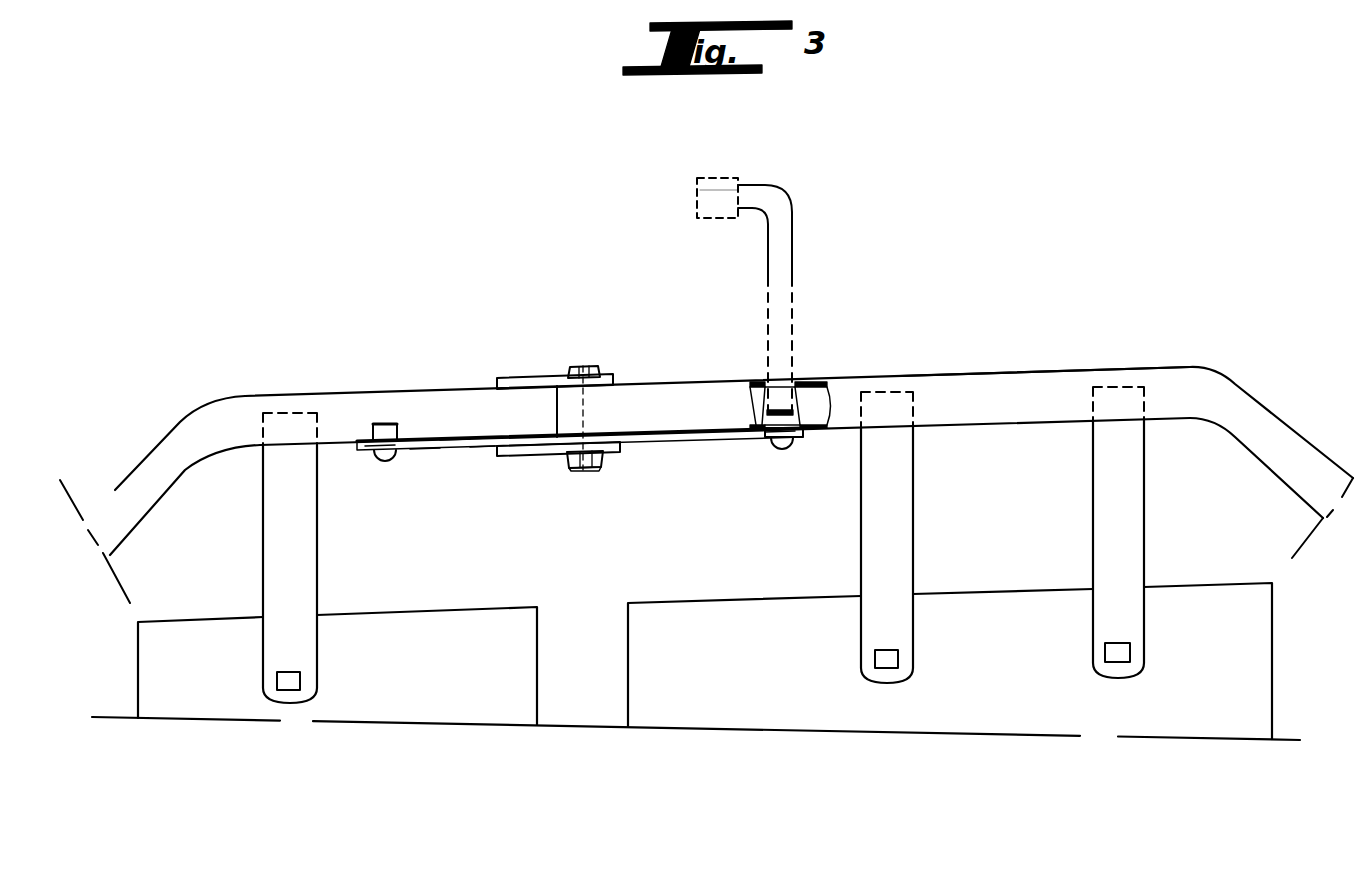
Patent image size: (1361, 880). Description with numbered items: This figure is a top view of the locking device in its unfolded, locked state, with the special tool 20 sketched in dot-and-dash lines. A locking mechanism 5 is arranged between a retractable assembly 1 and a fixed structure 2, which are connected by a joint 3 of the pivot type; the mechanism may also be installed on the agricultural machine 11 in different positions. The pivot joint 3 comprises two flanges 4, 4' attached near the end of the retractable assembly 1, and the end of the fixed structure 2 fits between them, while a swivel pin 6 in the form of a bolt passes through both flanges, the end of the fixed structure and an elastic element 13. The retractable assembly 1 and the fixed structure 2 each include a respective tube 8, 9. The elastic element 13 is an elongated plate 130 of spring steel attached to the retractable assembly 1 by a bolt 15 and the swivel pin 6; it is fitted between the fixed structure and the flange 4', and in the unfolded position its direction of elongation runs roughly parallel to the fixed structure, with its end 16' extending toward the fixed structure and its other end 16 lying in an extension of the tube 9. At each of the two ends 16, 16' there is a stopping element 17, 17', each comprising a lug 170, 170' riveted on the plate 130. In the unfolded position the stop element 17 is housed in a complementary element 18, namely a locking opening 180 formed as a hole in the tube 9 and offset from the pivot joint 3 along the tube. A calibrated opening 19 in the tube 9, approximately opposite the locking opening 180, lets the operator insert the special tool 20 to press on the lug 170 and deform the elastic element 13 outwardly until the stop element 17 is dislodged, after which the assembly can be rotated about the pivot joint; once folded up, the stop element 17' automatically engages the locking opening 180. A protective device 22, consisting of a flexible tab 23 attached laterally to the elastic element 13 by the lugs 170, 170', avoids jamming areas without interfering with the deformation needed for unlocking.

The retractable assembly 1 is at (213, 393).
The fixed structure 2 is at (1200, 358).
The pivot joint 3 is at (595, 360).
The flange 4 is at (555, 332).
The flange 4' is at (558, 495).
The locking mechanism 5 is at (628, 207).
The swivel pin 6 is at (577, 466).
The tube 8 is at (122, 492).
The tube 9 is at (1028, 382).
The agricultural machine 11 is at (437, 697).
The elastic element 13 is at (423, 420).
The bolt 15 is at (607, 460).
The end of elastic element 16 is at (401, 520).
The end of elastic element 16' is at (755, 510).
The stopping element 17 is at (810, 459).
The stopping element 17' is at (395, 380).
The complementary element 18 is at (757, 382).
The calibrated opening 19 is at (807, 371).
The special tool 20 is at (785, 238).
The protective device 22 is at (482, 467).
The tab 23 is at (424, 450).
The plate 130 is at (455, 437).
The lug 170 is at (744, 470).
The lug 170' is at (344, 361).
The locking opening 180 is at (830, 385).